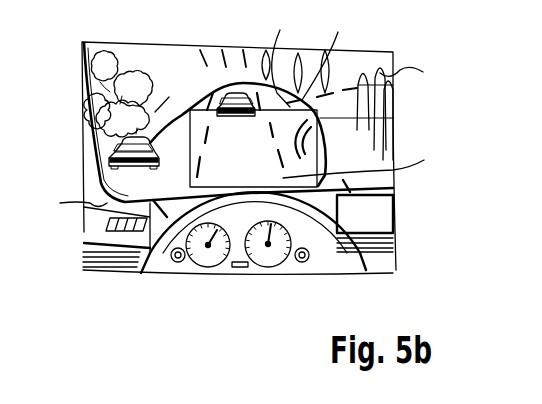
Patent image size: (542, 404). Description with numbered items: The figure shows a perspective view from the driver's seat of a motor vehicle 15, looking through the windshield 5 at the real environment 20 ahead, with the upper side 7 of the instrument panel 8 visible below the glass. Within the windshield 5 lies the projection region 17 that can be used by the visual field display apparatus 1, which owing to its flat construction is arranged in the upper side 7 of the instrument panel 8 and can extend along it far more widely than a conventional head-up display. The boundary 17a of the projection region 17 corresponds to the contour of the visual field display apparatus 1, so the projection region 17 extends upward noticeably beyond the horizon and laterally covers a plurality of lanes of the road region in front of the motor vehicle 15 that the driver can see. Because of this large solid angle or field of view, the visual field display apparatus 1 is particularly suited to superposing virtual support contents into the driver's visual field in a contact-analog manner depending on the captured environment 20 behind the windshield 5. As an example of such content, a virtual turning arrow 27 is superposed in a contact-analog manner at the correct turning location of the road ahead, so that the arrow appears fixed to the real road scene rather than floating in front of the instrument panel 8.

The visual field display apparatus 1 is at (258, 122).
The windshield 5 is at (378, 111).
The upper side of the instrument panel 7 is at (150, 255).
The instrument panel 8 is at (265, 266).
The motor vehicle 15 is at (70, 207).
The projection region 17 is at (257, 173).
The boundary of the projection region 17a is at (238, 96).
The environment 20 is at (190, 90).
The virtual turning arrow 27 is at (322, 82).